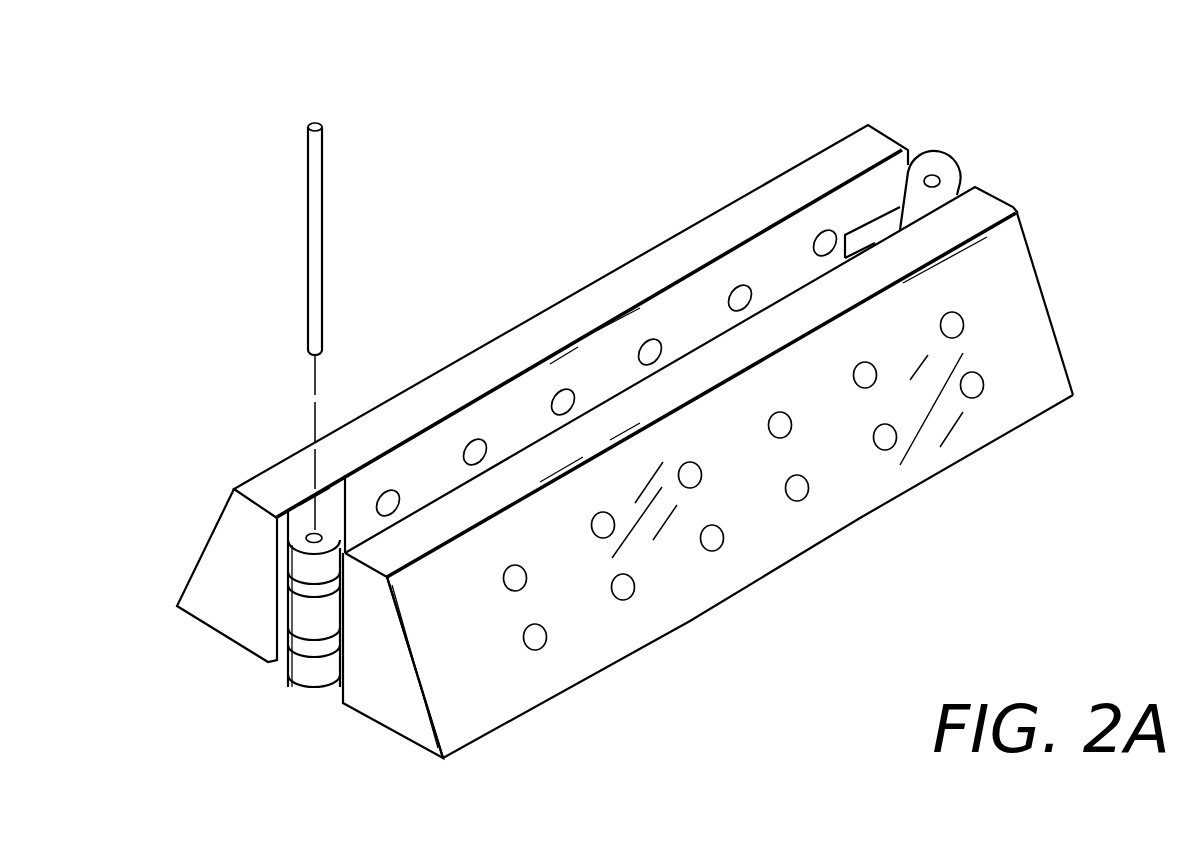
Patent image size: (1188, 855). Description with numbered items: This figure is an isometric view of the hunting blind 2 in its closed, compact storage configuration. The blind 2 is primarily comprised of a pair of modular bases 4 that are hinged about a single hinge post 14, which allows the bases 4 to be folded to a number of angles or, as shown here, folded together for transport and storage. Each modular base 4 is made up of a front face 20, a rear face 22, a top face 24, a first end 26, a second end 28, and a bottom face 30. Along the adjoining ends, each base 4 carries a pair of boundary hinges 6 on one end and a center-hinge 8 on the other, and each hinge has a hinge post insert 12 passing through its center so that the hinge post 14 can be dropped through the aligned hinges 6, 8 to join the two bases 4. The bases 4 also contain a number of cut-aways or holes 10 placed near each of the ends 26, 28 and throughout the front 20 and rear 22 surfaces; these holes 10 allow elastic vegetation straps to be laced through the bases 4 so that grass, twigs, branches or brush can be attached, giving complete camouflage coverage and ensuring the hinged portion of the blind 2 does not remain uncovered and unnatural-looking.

The hunting blind 2 is at (133, 296).
The modular base 4 is at (888, 100).
The boundary hinge 6 is at (298, 655).
The center-hinge 8 is at (327, 626).
The holes 10 is at (700, 478).
The hinge post insert 12 is at (311, 535).
The hinge post 14 is at (322, 258).
The front face 20 is at (800, 382).
The rear face 22 is at (672, 324).
The top face 24 is at (632, 286).
The first end 26 is at (370, 711).
The second end 28 is at (217, 549).
The bottom face 30 is at (960, 465).